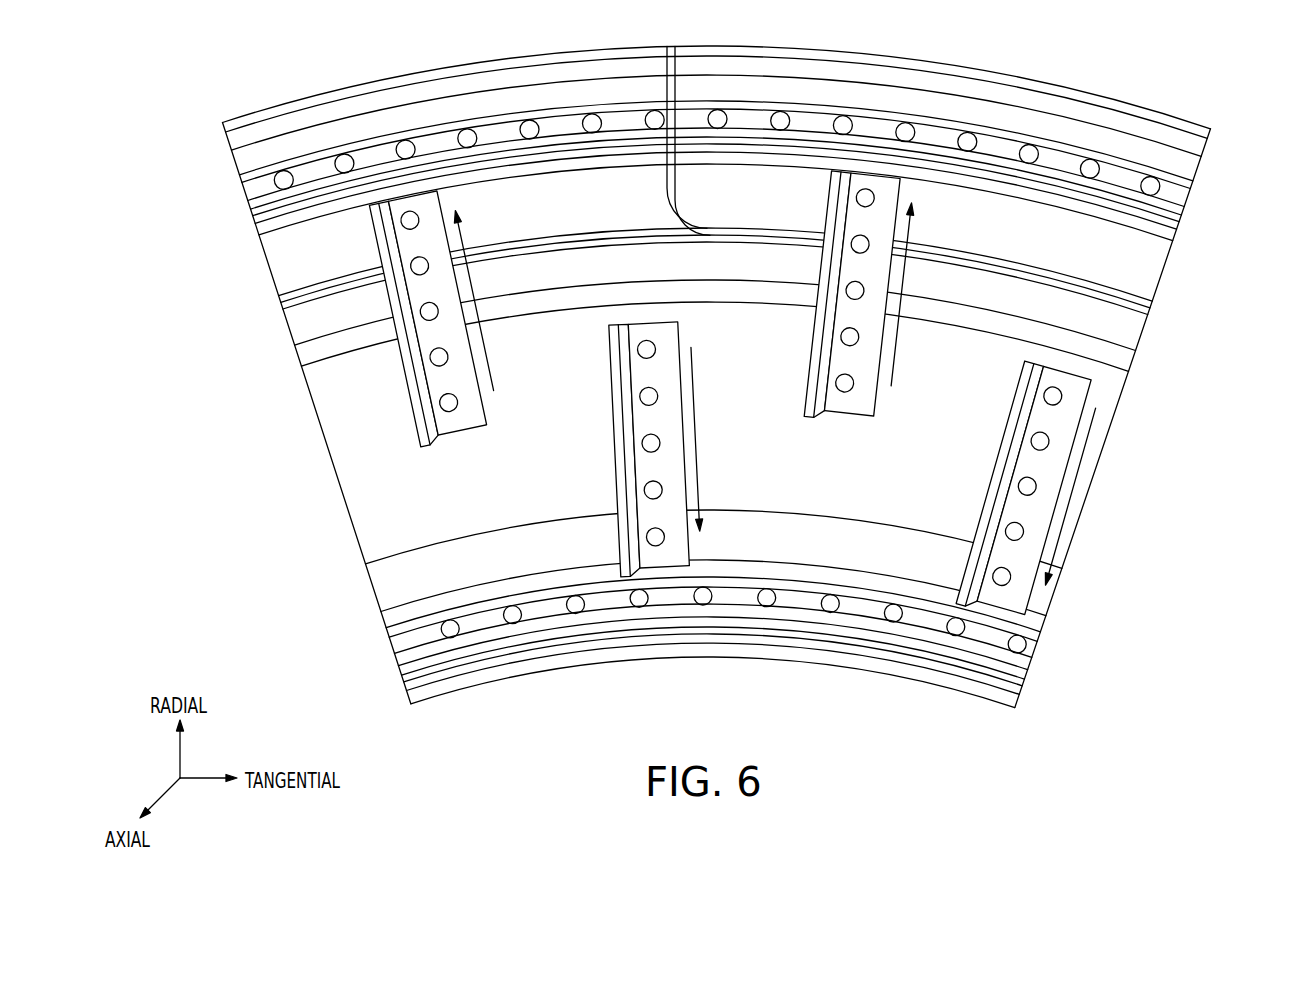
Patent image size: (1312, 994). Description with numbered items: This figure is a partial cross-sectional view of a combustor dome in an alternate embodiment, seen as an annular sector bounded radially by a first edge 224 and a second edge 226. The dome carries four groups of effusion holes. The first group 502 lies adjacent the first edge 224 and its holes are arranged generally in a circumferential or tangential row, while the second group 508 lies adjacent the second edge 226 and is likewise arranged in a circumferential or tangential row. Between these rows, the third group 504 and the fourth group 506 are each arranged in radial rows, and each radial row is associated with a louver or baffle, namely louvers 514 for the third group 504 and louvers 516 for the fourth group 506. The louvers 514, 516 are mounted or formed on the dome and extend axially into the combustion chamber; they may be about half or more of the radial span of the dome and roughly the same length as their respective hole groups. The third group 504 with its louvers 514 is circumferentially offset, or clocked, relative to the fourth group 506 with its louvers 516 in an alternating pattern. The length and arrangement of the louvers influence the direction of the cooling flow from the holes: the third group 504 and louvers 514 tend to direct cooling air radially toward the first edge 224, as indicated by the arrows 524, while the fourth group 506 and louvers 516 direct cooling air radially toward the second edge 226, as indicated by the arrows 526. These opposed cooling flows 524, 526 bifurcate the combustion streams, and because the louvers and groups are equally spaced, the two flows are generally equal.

The first edge 224 is at (986, 701).
The second edge 226 is at (1090, 93).
The first group of effusion holes 502 is at (402, 648).
The third group of effusion holes 504 is at (643, 323).
The fourth group of effusion holes 506 is at (457, 431).
The second group of effusion holes 508 is at (1186, 198).
The louver 514 is at (610, 437).
The louver 516 is at (406, 392).
The arrows 524 is at (700, 466).
The arrows 526 is at (490, 361).